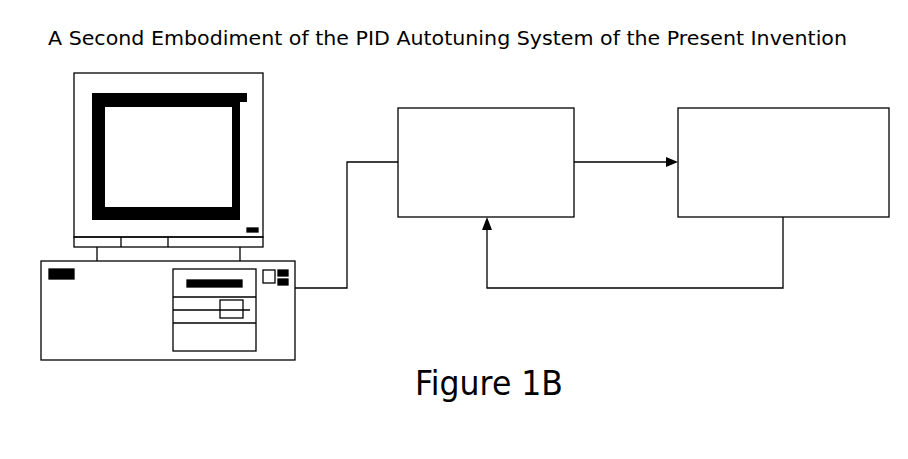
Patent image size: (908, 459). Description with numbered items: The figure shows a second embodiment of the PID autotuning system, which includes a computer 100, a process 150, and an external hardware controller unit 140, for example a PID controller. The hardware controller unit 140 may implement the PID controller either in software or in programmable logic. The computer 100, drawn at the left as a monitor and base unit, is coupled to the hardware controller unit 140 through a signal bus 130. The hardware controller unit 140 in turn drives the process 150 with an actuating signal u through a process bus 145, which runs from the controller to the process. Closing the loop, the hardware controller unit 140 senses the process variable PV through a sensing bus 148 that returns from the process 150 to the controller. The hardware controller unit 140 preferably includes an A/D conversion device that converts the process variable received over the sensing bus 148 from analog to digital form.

The computer 100 is at (60, 260).
The signal bus 130 is at (348, 253).
The hardware controller unit 140 is at (467, 202).
The process bus 145 is at (610, 160).
The sensing bus 148 is at (608, 287).
The process 150 is at (765, 187).